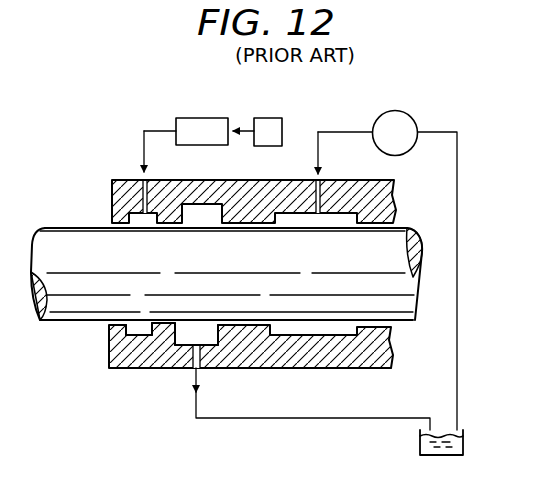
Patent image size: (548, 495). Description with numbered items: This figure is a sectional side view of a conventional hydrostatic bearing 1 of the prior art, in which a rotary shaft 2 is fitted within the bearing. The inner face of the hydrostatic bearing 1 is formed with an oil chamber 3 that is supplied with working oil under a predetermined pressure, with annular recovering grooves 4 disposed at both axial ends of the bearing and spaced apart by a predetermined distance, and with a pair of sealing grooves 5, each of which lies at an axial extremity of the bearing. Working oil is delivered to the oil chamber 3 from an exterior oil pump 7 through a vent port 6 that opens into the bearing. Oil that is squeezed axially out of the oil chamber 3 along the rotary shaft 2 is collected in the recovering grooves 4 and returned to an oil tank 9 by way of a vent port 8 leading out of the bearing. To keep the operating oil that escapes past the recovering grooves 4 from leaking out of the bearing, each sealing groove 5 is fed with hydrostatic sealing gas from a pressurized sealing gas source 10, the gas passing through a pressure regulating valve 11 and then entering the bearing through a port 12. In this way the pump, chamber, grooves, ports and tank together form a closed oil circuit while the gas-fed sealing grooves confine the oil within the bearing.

The hydrostatic bearing 1 is at (103, 188).
The rotary shaft 2 is at (64, 306).
The oil chamber 3 is at (318, 333).
The annular recovering grooves 4 is at (180, 335).
The sealing grooves 5 is at (135, 332).
The vent port 6 is at (313, 188).
The exterior oil pump 7 is at (405, 112).
The vent port 8 is at (200, 360).
The oil tank 9 is at (422, 442).
The pressurized sealing gas source 10 is at (267, 118).
The pressure regulating valve 11 is at (198, 125).
The port 12 is at (152, 178).